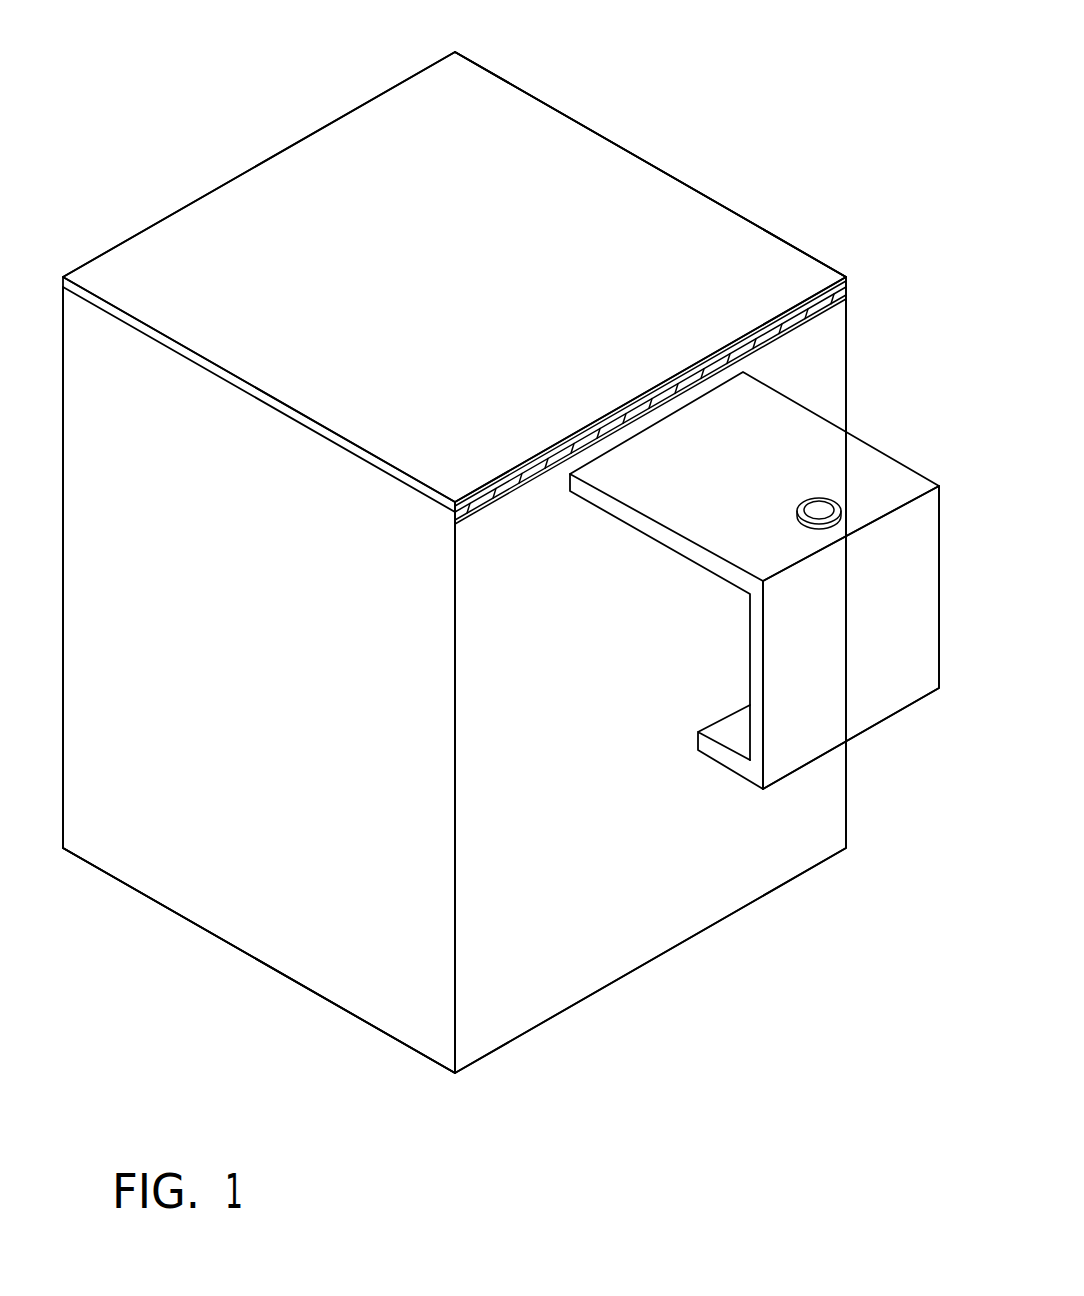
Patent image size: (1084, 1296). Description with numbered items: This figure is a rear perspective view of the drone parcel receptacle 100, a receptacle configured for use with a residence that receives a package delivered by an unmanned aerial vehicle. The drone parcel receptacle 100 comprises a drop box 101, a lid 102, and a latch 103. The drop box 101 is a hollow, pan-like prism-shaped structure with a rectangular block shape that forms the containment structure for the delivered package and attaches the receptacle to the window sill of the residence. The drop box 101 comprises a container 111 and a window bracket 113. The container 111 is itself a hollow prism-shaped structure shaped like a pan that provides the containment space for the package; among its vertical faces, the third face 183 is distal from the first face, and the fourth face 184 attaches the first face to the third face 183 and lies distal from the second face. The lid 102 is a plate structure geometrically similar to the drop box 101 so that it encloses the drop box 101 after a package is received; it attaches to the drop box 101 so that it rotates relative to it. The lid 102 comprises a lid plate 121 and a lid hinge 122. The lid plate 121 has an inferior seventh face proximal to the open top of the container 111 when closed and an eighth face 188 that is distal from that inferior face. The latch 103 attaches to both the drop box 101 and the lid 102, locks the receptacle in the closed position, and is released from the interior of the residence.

The drone parcel receptacle 100 is at (247, 108).
The lid 102 is at (732, 190).
The eighth face 188 is at (477, 128).
The lid plate 121 is at (622, 148).
The lid hinge 122 is at (830, 300).
The drop box 101 is at (858, 393).
The latch 103 is at (843, 488).
The window bracket 113 is at (920, 624).
The container 111 is at (63, 640).
The third face 183 is at (622, 918).
The fourth face 184 is at (403, 1012).